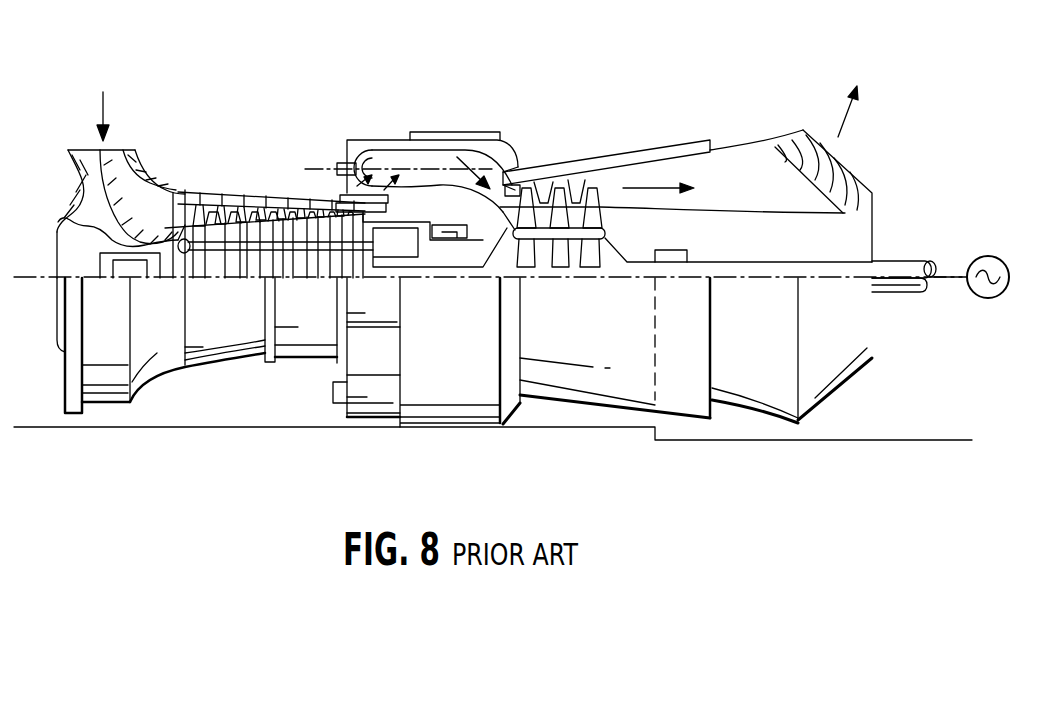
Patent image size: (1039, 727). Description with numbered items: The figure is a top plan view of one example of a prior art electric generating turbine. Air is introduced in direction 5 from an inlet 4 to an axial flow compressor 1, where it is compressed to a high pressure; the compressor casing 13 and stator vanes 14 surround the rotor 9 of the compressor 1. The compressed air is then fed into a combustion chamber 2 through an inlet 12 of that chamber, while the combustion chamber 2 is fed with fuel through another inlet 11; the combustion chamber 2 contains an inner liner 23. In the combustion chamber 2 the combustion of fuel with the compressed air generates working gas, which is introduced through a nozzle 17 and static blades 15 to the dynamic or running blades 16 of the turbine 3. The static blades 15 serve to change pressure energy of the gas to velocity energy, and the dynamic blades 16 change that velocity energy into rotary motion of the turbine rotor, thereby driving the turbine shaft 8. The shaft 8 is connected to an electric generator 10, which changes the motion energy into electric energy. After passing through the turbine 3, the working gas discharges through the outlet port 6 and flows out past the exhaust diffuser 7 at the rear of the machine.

The axial flow compressor 1 is at (204, 193).
The combustion chamber 2 is at (425, 133).
The turbine 3 is at (665, 141).
The inlet 4 is at (97, 149).
The direction of air introduction 5 is at (104, 102).
The outlet port 6 is at (668, 180).
The exhaust diffuser 7 is at (810, 137).
The turbine shaft 8 is at (903, 260).
The compressor rotor 9 is at (256, 237).
The electric generator 10 is at (994, 256).
The fuel inlet 11 is at (340, 163).
The compressed air inlet 12 is at (380, 181).
The compressor casing 13 is at (192, 193).
The compressor stator vane 14 is at (238, 200).
The static blades 15 is at (578, 178).
The dynamic blades 16 is at (603, 186).
The nozzle 17 is at (512, 163).
The combustor liner 23 is at (457, 155).